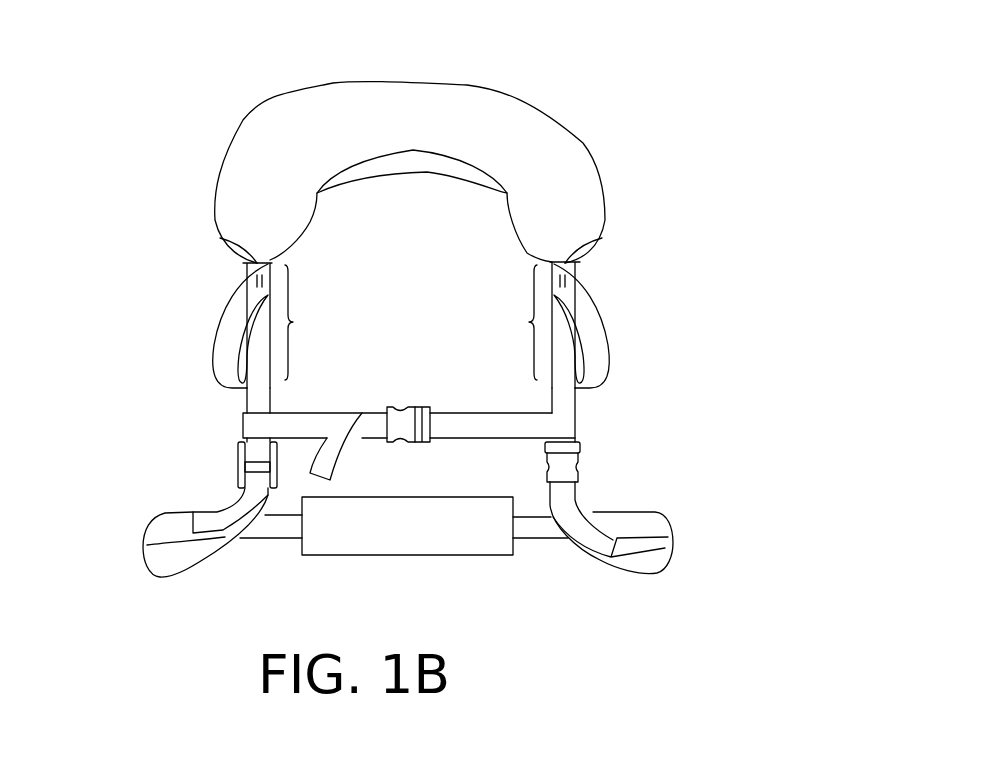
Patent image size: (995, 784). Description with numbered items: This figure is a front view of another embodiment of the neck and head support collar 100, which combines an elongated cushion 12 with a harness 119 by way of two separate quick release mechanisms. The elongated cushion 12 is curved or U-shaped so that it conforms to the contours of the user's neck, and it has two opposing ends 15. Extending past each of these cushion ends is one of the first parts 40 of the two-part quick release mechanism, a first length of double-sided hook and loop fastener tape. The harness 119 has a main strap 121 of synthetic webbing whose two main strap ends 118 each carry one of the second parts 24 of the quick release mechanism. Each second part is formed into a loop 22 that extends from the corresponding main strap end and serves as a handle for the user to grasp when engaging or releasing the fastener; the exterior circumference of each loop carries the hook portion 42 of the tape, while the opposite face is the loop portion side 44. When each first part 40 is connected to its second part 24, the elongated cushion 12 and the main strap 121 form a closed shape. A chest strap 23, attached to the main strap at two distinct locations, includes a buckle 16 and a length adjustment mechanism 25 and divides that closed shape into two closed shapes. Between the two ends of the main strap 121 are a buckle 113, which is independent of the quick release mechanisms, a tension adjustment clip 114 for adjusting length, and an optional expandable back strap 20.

The neck and head support collar 100 is at (688, 76).
The elongated cushion 12 is at (485, 100).
The opposing ends 15 is at (220, 238).
The first parts of the quick release mechanism 40 is at (583, 263).
The loop 22 is at (230, 318).
The hook portion 42 is at (225, 358).
The second parts of the quick release mechanism 24 is at (411, 322).
The loop portion side 44 is at (262, 372).
The main strap ends 118 is at (257, 393).
The chest strap 23 is at (458, 437).
The buckle 16 is at (423, 405).
The length adjustment mechanism 25 is at (363, 430).
The tension adjustment clip 114 is at (238, 464).
The buckle 113 is at (581, 467).
The main strap 121 is at (228, 545).
The harness 119 is at (156, 505).
The expandable back strap 20 is at (438, 547).